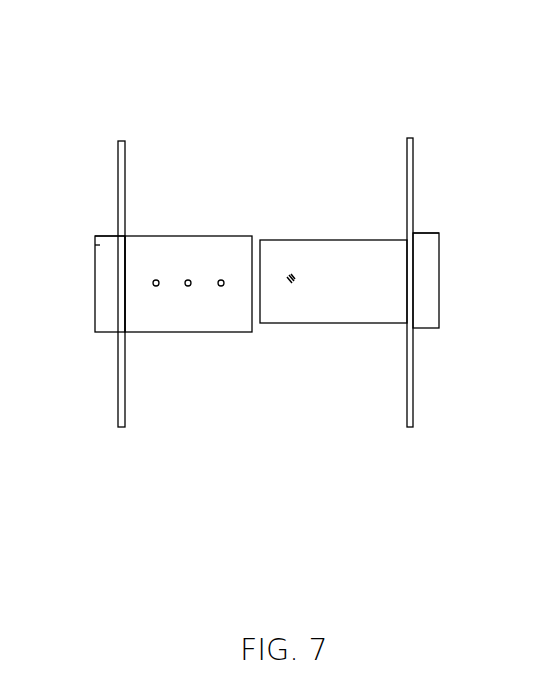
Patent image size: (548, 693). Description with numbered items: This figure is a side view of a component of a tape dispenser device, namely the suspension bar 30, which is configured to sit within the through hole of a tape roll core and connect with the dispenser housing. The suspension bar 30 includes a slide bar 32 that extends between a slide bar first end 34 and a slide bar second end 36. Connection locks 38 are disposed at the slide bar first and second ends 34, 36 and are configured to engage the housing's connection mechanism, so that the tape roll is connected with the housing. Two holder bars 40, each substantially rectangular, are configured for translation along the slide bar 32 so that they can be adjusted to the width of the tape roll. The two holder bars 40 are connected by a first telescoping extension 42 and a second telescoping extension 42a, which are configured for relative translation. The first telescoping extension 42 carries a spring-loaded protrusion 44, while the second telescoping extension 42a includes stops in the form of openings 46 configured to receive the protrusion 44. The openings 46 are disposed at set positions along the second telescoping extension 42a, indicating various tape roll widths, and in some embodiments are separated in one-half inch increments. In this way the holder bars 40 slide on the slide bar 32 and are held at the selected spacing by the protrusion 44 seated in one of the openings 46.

The suspension bar 30 is at (105, 130).
The slide bar 32 is at (80, 310).
The slide bar first end 34 is at (93, 270).
The slide bar second end 36 is at (432, 305).
The connection locks 38 is at (92, 245).
The holder bar 40 is at (122, 140).
The first telescoping extension 42 is at (323, 244).
The second telescoping extension 42a is at (181, 244).
The spring-loaded protrusion 44 is at (290, 275).
The openings 46 is at (155, 287).